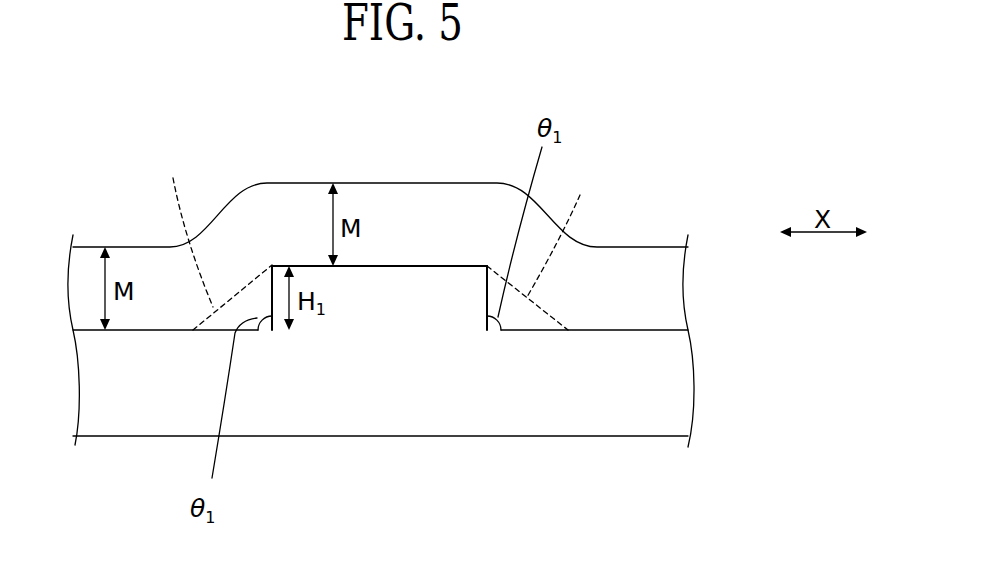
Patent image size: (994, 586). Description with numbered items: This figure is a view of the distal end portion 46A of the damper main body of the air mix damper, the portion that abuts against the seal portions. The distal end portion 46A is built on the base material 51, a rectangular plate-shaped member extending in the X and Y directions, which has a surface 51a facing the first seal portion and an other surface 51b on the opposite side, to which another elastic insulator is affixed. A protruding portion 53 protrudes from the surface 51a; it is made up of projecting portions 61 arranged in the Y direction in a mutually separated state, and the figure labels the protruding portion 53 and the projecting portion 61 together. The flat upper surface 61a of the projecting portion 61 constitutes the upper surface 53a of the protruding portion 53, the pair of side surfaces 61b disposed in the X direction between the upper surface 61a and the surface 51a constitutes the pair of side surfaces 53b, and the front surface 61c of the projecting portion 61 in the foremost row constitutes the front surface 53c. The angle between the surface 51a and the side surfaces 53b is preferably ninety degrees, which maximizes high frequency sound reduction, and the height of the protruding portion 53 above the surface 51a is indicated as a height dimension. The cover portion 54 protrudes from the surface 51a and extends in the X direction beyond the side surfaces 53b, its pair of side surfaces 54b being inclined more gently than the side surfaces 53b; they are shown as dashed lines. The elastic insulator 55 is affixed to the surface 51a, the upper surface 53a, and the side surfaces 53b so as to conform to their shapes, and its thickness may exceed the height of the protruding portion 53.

The distal end portion 46A is at (117, 78).
The base material 51 is at (432, 379).
The surface 51a is at (548, 323).
The other surface 51b is at (622, 437).
The protruding portion 53 is at (372, 307).
The upper surface 53a is at (395, 165).
The side surfaces 53b is at (359, 291).
The front surface 53c is at (376, 427).
The cover portion 54 is at (545, 307).
The side surfaces 54b is at (381, 227).
The elastic insulator 55 is at (388, 203).
The projecting portion 61 is at (372, 307).
The upper surface 61a is at (438, 263).
The side surfaces 61b is at (447, 452).
The front surface 61c is at (348, 300).